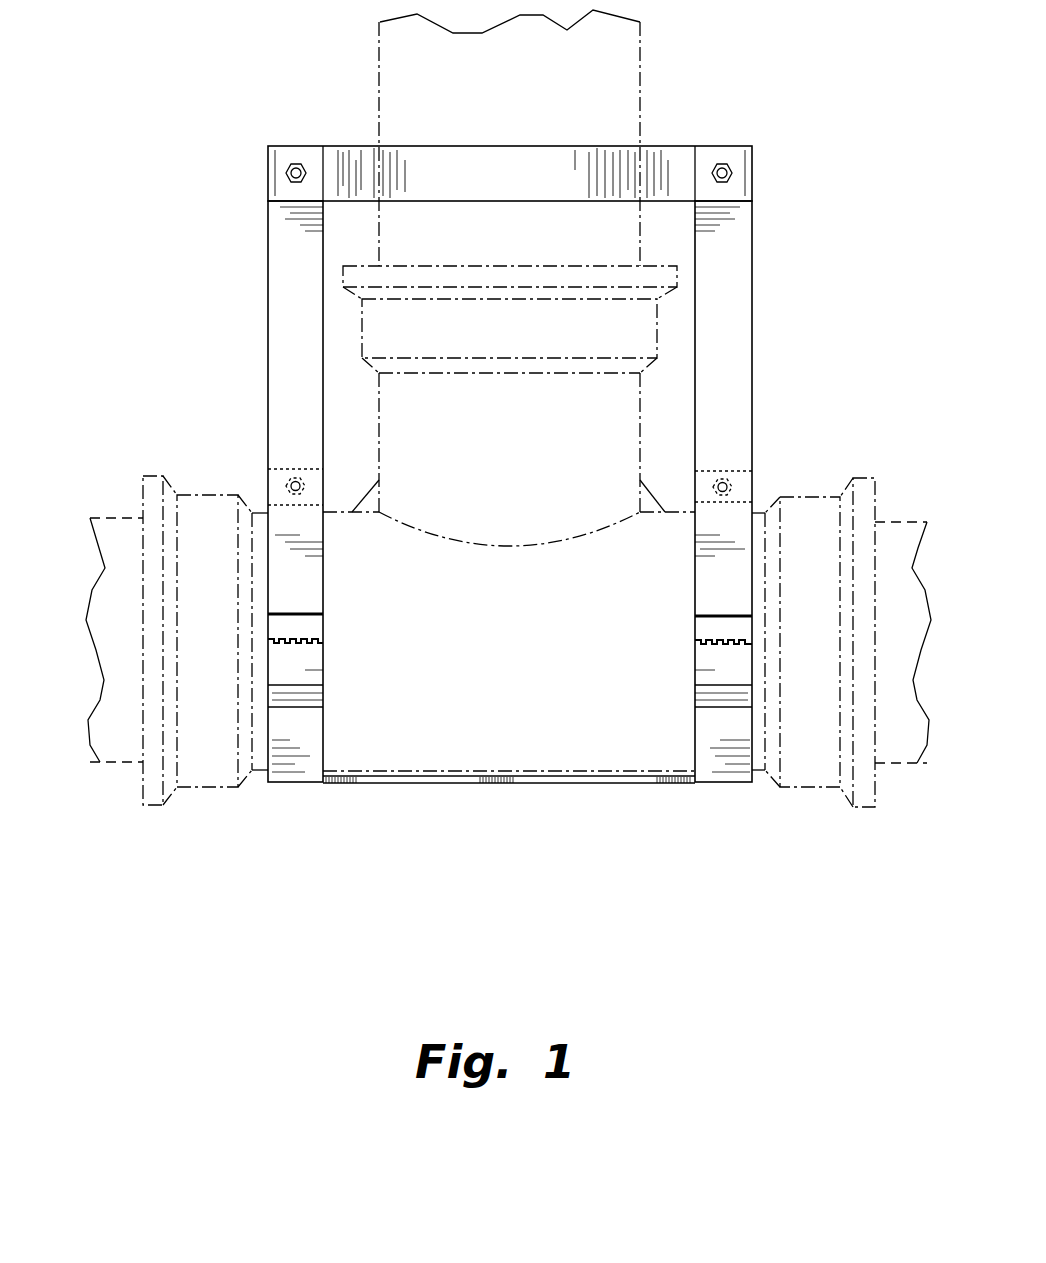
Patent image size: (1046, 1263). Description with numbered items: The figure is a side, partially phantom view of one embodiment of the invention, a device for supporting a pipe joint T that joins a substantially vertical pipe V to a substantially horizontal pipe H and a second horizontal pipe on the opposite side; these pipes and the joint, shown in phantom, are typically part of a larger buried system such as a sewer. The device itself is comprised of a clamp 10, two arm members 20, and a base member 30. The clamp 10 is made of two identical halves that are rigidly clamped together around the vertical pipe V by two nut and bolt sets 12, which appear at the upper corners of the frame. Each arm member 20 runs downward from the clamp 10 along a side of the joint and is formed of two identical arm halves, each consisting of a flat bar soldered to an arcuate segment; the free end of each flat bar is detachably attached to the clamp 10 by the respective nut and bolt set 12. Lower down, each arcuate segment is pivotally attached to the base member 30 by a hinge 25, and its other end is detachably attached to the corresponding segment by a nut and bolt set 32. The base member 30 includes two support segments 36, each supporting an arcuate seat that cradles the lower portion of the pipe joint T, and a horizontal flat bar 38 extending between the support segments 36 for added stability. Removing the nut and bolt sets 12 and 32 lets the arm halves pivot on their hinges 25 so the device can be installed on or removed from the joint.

The clamp 10 is at (532, 479).
The nut and bolt set 12 is at (297, 162).
The arm member 20 is at (248, 286).
The hinge 25 is at (323, 641).
The base member 30 is at (496, 821).
The nut and bolt set 32 is at (295, 464).
The support segment 36 is at (311, 753).
The flat bar 38 is at (415, 783).
The vertical pipe V is at (640, 60).
The pipe joint T is at (200, 495).
The horizontal pipe H is at (143, 518).